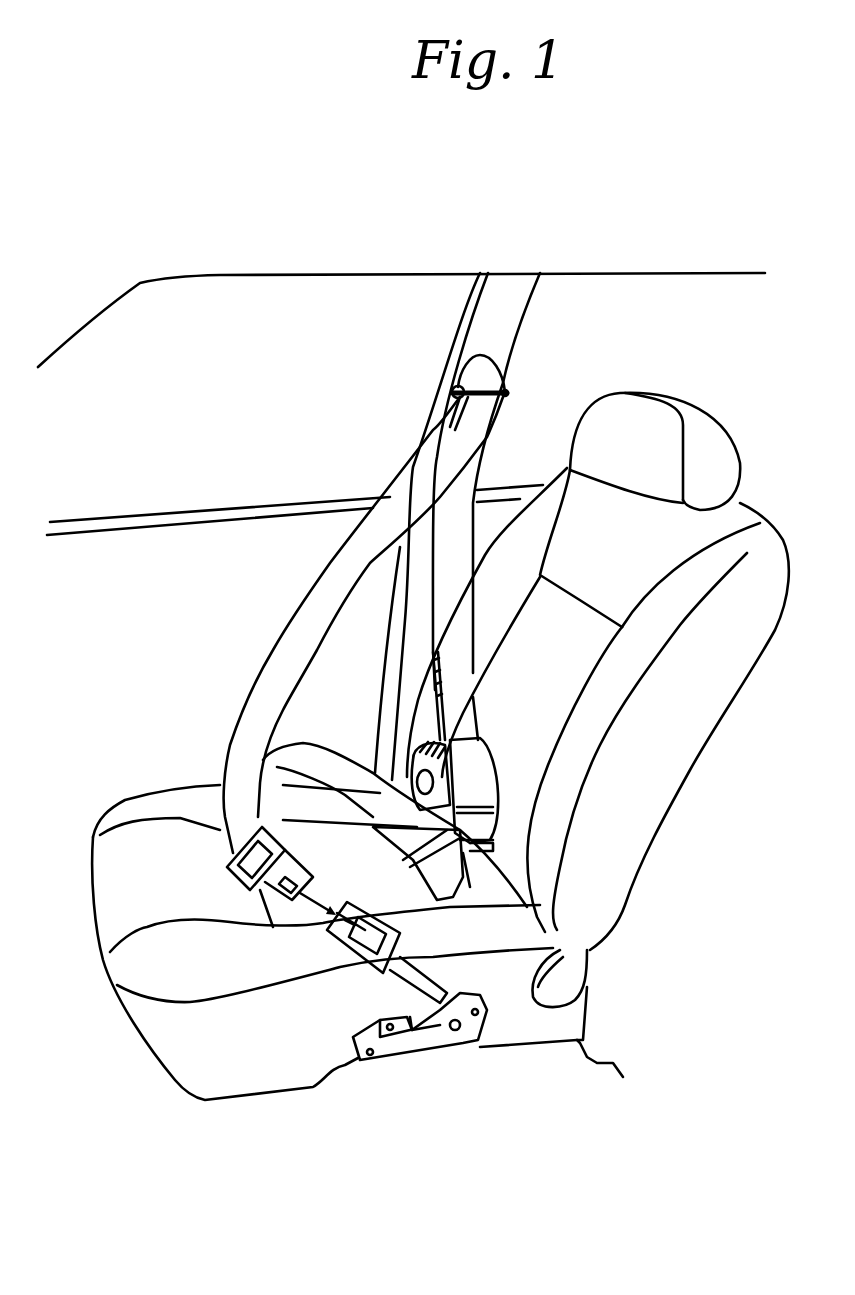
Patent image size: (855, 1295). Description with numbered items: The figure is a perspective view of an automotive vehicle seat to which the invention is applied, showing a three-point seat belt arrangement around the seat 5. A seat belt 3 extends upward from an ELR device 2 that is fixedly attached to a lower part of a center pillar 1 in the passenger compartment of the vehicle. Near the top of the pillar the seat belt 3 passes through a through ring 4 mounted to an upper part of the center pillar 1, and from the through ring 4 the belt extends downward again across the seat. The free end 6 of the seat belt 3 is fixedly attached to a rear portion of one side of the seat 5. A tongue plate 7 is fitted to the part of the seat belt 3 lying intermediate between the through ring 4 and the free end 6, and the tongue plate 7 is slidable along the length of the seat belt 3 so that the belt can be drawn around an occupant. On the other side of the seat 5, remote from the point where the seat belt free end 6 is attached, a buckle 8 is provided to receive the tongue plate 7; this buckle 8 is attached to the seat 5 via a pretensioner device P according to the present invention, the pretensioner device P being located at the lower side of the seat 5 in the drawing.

The center pillar 1 is at (418, 603).
The ELR device 2 is at (488, 780).
The seat belt 3 is at (473, 477).
The through ring 4 is at (508, 383).
The seat 5 is at (190, 793).
The free end 6 is at (425, 877).
The tongue plate 7 is at (250, 887).
The buckle 8 is at (372, 957).
The pretensioner device P is at (463, 1060).